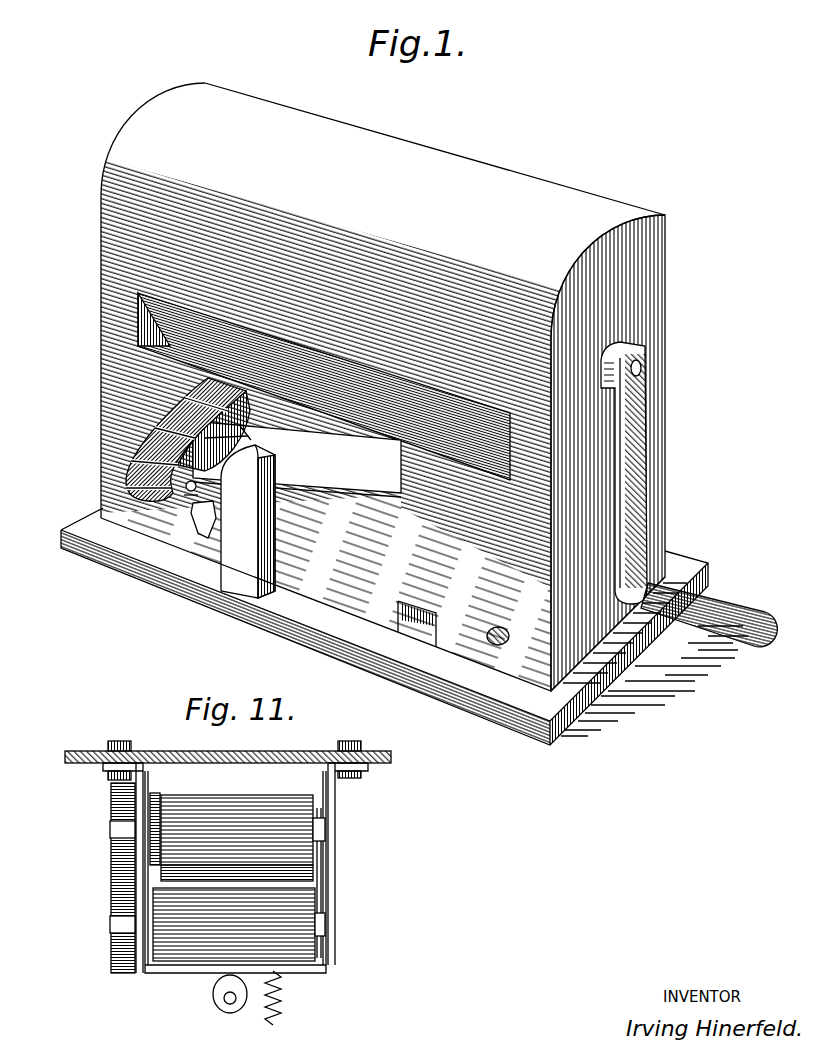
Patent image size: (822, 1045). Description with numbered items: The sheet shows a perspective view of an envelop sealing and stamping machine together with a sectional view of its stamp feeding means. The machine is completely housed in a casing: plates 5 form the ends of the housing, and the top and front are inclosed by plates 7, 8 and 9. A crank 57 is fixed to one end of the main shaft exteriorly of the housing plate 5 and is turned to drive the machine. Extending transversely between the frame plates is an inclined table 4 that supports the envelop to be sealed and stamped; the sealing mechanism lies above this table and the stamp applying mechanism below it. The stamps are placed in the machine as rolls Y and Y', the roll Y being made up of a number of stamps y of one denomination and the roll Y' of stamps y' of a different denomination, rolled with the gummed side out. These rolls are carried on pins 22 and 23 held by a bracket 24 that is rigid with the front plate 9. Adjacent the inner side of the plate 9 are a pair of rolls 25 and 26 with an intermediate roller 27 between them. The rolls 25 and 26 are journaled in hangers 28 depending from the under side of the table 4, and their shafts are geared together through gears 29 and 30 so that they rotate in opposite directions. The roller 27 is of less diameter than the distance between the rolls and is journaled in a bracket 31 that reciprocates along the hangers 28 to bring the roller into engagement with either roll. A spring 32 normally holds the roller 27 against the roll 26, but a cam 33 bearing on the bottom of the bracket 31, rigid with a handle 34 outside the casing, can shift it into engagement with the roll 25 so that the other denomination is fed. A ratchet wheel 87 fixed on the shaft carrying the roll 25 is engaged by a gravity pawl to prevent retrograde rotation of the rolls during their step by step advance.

In FIG. 1, the inclined table 4 is at (130, 338).
In FIG. 11, the inclined table 4 is at (283, 746).
In FIG. 1, the end plate 5 is at (641, 292).
In FIG. 1, the housing plate 7 is at (600, 198).
In FIG. 1, the housing plate 8 is at (100, 245).
In FIG. 1, the front plate 9 is at (103, 388).
In FIG. 1, the pin 22 is at (183, 483).
In FIG. 1, the pin 23 is at (262, 440).
In FIG. 1, the bracket 24 is at (150, 490).
In FIG. 11, the roll 25 is at (297, 795).
In FIG. 11, the roll 26 is at (297, 898).
In FIG. 11, the intermediate roller 27 is at (303, 862).
In FIG. 11, the hanger 28 is at (327, 948).
In FIG. 11, the gear 29 is at (103, 850).
In FIG. 11, the gear 30 is at (113, 888).
In FIG. 11, the bracket 31 is at (303, 962).
In FIG. 11, the spring 32 is at (273, 1003).
In FIG. 11, the cam 33 is at (208, 983).
In FIG. 1, the handle 34 is at (194, 530).
In FIG. 1, the crank 57 is at (631, 462).
In FIG. 11, the ratchet wheel 87 is at (147, 783).
In FIG. 1, the stamp roll Y is at (158, 439).
In FIG. 1, the stamp y is at (157, 551).
In FIG. 1, the stamp roll Y' is at (251, 433).
In FIG. 1, the stamp y' is at (279, 437).